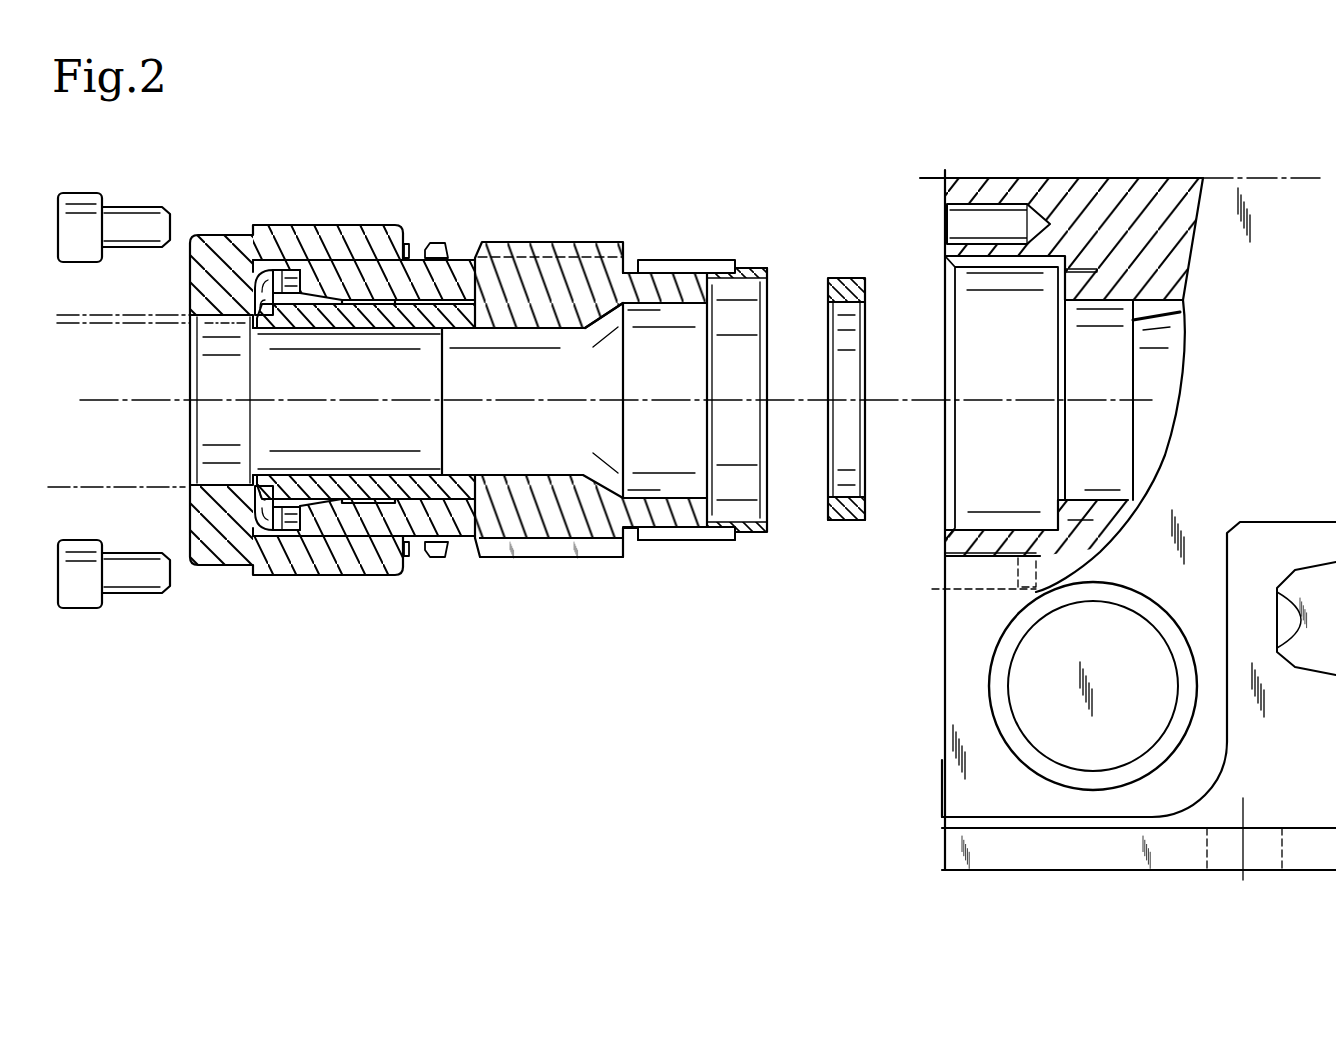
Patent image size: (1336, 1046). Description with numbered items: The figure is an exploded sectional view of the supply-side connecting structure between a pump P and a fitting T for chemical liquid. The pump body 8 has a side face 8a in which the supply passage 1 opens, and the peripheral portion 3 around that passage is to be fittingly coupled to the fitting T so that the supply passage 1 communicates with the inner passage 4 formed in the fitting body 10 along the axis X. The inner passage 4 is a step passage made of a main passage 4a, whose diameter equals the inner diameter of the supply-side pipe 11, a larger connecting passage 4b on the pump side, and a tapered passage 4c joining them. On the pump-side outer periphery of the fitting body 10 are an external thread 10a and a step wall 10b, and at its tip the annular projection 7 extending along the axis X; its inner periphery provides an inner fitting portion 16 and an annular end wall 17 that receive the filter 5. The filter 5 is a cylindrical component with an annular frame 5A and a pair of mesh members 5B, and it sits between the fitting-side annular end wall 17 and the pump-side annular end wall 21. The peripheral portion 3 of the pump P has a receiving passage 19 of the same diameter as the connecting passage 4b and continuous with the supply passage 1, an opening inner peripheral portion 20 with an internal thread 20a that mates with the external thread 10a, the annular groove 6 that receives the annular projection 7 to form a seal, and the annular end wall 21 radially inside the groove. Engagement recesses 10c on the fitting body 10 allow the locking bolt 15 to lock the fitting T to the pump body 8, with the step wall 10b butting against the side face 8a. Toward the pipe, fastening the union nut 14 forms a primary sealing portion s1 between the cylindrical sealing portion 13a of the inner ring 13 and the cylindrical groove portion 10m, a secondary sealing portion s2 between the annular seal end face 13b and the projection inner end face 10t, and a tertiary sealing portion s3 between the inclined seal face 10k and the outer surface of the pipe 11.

The supply passage 1 is at (1158, 314).
The peripheral portion 3 is at (948, 250).
The inner passage 4 is at (476, 466).
The main passage 4a is at (527, 330).
The connecting passage 4b is at (678, 307).
The tapered passage 4c is at (607, 322).
The filter 5 is at (846, 272).
The annular frame 5A is at (836, 522).
The mesh members 5B is at (864, 447).
The annular groove 6 is at (1123, 213).
The annular projection 7 is at (747, 268).
The pump body 8 is at (1011, 863).
The side face 8a is at (940, 768).
The fitting body 10 is at (380, 518).
The external thread 10a is at (700, 541).
The step wall 10b is at (630, 255).
The engagement recesses 10c is at (594, 556).
The inclined seal face 10k is at (322, 312).
The cylindrical groove portion 10m is at (500, 542).
The projection inner end face 10t is at (497, 258).
The supply-side pipe 11 is at (184, 316).
The inner ring 13 is at (317, 495).
The cylindrical sealing portion 13a is at (455, 508).
The annular seal end face 13b is at (467, 258).
The union nut 14 is at (230, 245).
The locking bolt 15 is at (133, 202).
The inner fitting portion 16 is at (742, 278).
The annular end wall 17 is at (712, 507).
The receiving passage 19 is at (1122, 470).
The opening inner peripheral portion 20 is at (965, 332).
The internal thread 20a is at (985, 515).
The annular end wall 21 is at (1058, 510).
The fitting T is at (590, 230).
The pump P is at (932, 670).
The axis X is at (130, 396).
The primary sealing portion s1 is at (575, 646).
The secondary sealing portion s2 is at (590, 149).
The tertiary sealing portion s3 is at (422, 149).